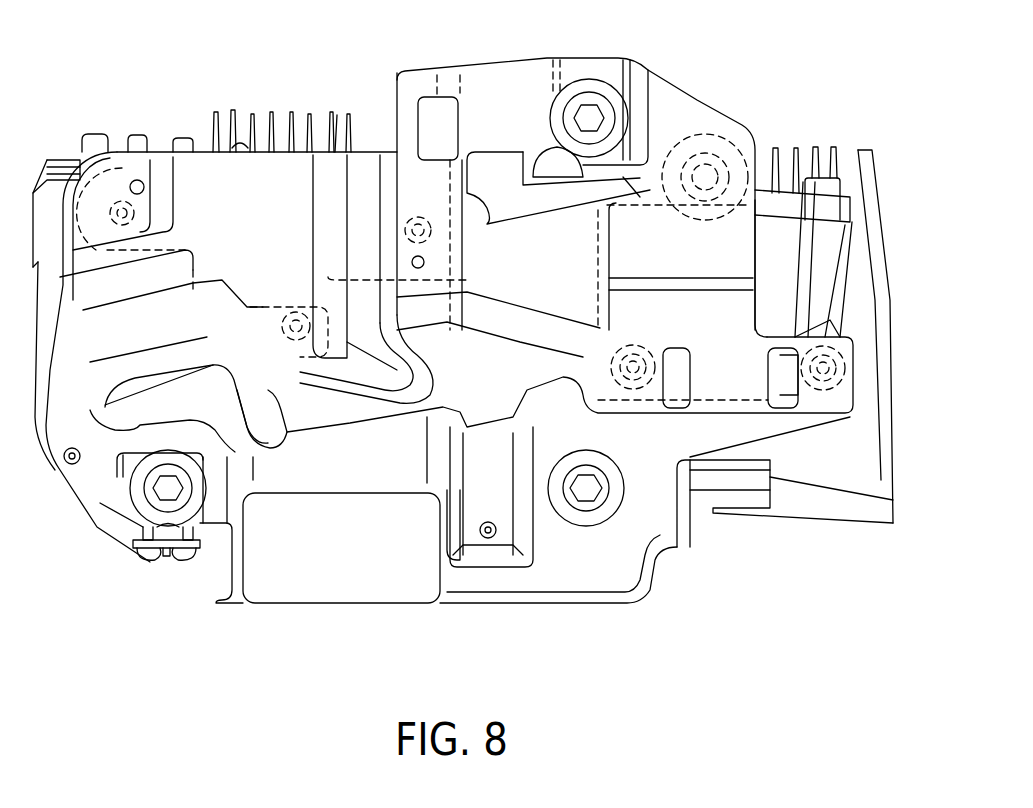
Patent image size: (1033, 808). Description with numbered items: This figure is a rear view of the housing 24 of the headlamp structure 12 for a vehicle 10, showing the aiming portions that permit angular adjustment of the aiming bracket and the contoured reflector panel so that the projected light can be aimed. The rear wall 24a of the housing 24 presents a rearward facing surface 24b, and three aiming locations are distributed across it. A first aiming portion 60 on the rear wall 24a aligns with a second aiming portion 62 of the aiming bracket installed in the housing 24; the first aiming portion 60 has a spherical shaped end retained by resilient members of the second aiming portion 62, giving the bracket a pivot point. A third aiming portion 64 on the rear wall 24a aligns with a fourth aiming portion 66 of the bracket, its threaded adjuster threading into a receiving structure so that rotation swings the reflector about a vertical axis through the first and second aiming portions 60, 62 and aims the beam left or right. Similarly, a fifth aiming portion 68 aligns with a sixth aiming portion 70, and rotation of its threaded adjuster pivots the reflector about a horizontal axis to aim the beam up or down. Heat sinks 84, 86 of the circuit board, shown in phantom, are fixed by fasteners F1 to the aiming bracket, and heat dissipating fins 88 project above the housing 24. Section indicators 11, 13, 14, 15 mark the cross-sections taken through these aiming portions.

The vehicle 10 is at (588, 400).
The section line 11- 11 is at (508, 488).
The headlamp structure 12 is at (168, 360).
The section line 13- 13 is at (90, 485).
The section line 14- 14 is at (525, 118).
The section line 15- 15 is at (587, 17).
The housing 24 is at (686, 98).
The rear wall 24a is at (228, 190).
The rearward facing surface 24b is at (275, 195).
The first aiming portion 60 is at (586, 493).
The second aiming portion 62 is at (586, 488).
The third aiming portion 64 is at (180, 487).
The fourth aiming portion 66 is at (168, 488).
The fifth aiming portion 68 is at (588, 112).
The sixth aiming portion 70 is at (589, 118).
The heat sink 84 is at (62, 152).
The heat sink 86 is at (705, 250).
The heat dissipating fins 88 is at (336, 130).
The fasteners F1 is at (140, 207).